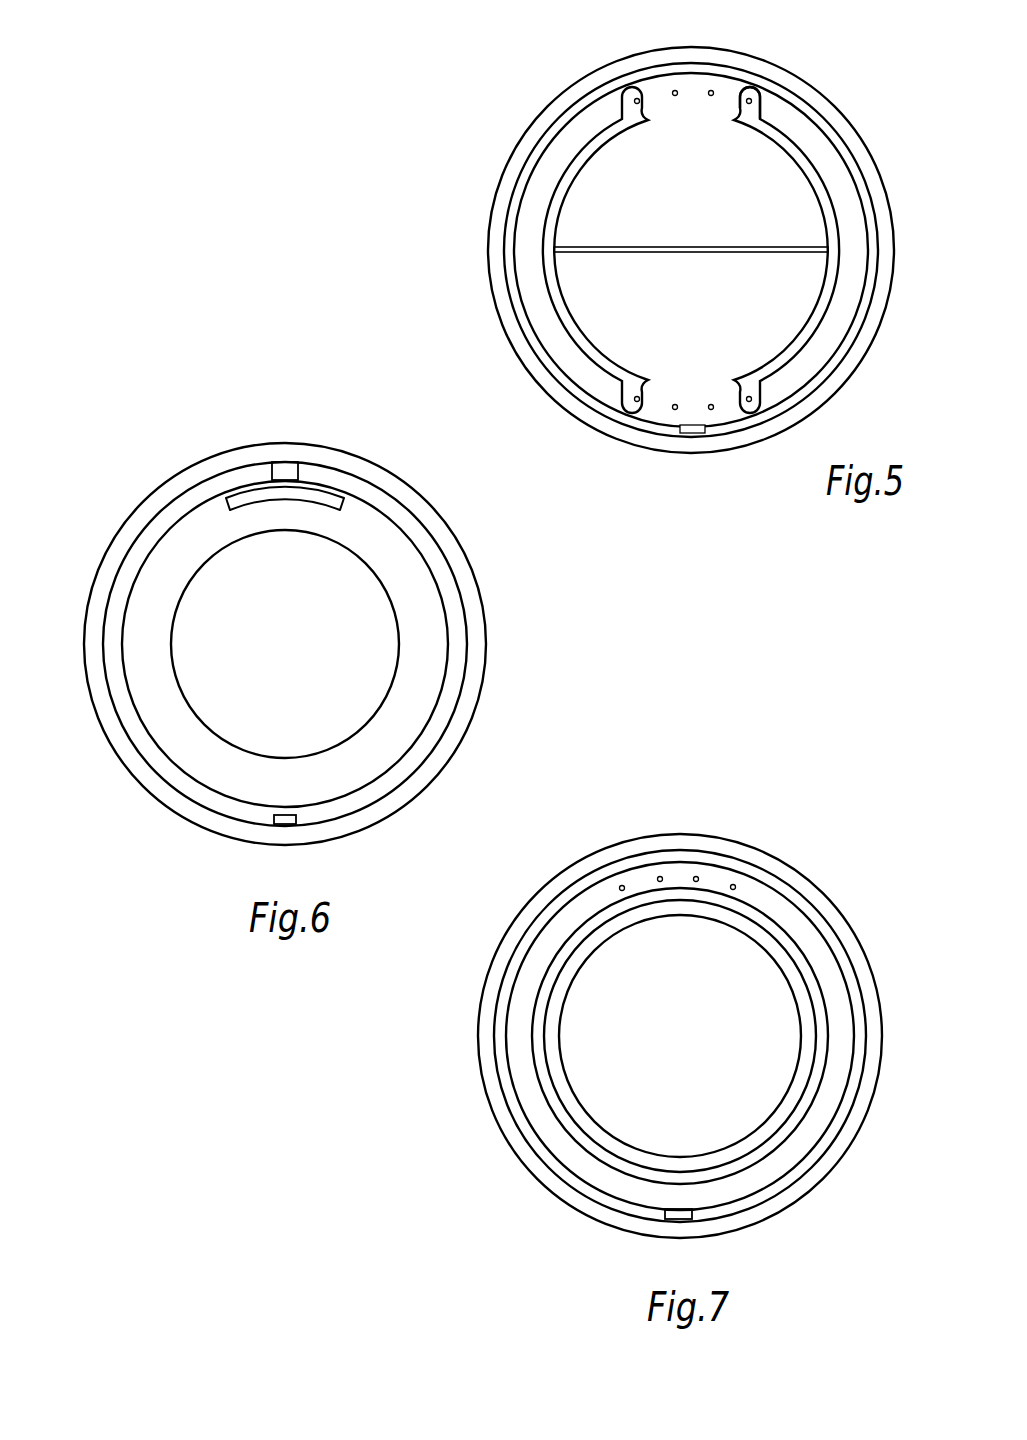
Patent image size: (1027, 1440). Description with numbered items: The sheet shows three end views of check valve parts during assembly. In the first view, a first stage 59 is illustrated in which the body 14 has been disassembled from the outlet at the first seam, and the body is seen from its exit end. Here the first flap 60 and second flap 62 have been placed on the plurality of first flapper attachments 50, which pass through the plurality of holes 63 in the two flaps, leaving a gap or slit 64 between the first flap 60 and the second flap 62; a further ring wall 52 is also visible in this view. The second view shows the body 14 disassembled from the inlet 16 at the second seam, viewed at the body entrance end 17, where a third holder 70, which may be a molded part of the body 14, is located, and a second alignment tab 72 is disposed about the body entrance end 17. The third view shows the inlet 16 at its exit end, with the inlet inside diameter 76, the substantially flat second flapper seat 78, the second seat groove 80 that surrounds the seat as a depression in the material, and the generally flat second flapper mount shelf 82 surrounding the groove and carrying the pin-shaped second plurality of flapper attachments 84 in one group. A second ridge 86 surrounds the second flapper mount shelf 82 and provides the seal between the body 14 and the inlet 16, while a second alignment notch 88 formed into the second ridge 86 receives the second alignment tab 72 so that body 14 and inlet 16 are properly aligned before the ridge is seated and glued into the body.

In FIG. 5, the body 14 is at (531, 128).
In FIG. 6, the body 14 is at (117, 483).
In FIG. 7, the inlet 16 is at (470, 916).
In FIG. 6, the body entrance end 17 is at (478, 607).
In FIG. 5, the plurality of first flapper attachments 50 is at (673, 92).
In FIG. 5, the outer wall 52 is at (510, 227).
In FIG. 5, the first stage 59 is at (762, 147).
In FIG. 5, the first flap 60 is at (805, 300).
In FIG. 5, the second flap 62 is at (805, 195).
In FIG. 5, the plurality of holes 63 is at (712, 92).
In FIG. 5, the gap or slit 64 is at (690, 253).
In FIG. 6, the third holder 70 is at (268, 490).
In FIG. 6, the second alignment tab 72 is at (290, 826).
In FIG. 7, the inlet inside diameter 76 is at (680, 1155).
In FIG. 7, the second flapper seat 78 is at (550, 1038).
In FIG. 7, the second seat groove 80 is at (600, 917).
In FIG. 7, the second flapper mount shelf 82 is at (595, 895).
In FIG. 7, the second plurality of flapper attachments 84 is at (658, 878).
In FIG. 7, the second ridge 86 is at (757, 876).
In FIG. 7, the second alignment notch 88 is at (680, 1220).